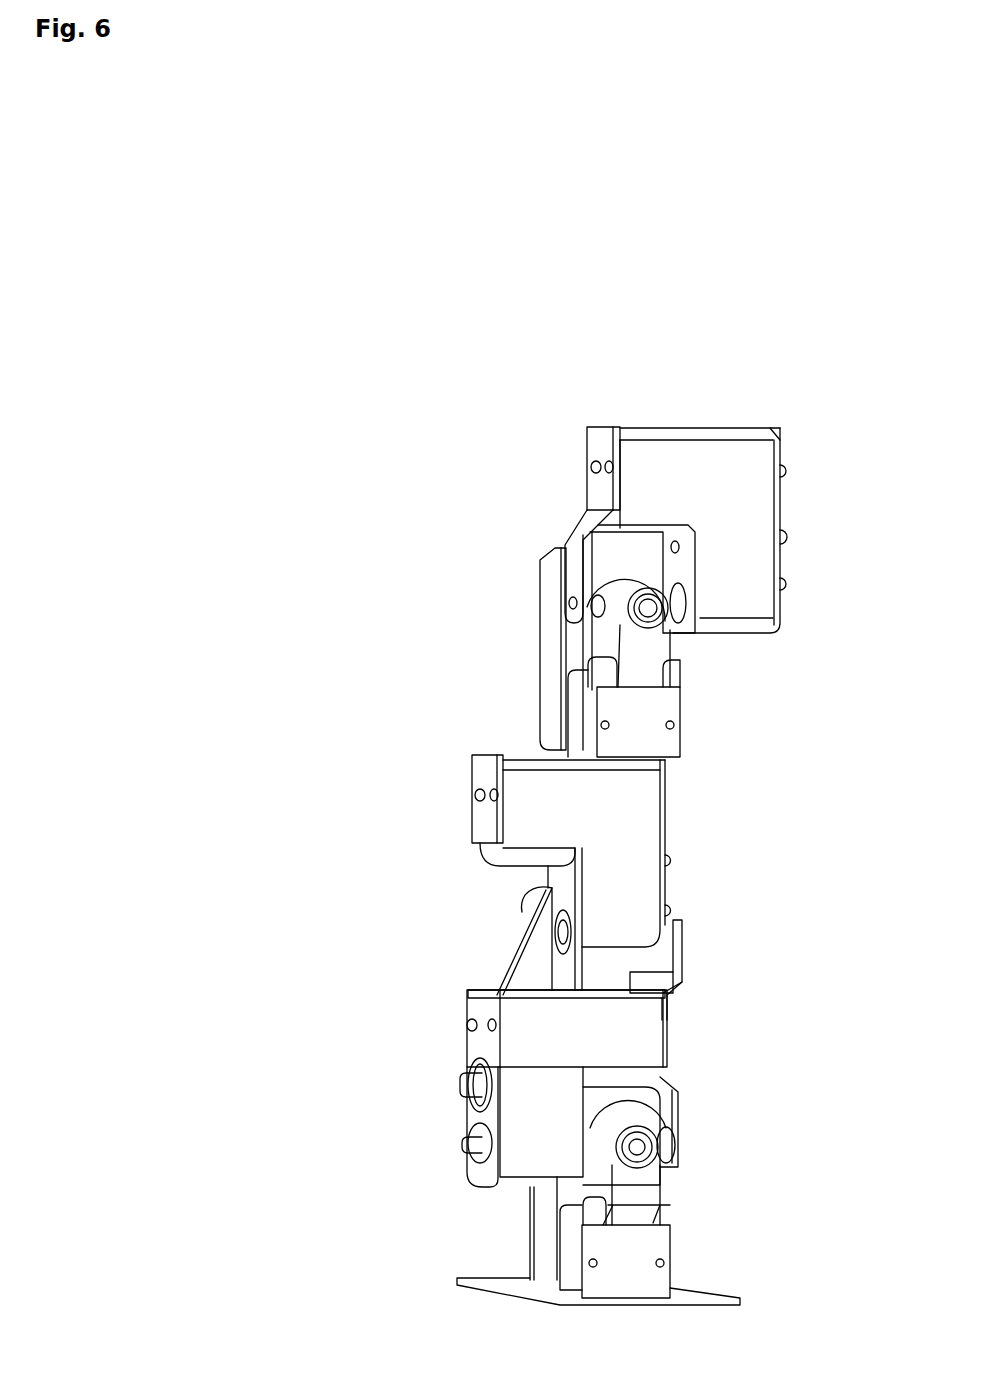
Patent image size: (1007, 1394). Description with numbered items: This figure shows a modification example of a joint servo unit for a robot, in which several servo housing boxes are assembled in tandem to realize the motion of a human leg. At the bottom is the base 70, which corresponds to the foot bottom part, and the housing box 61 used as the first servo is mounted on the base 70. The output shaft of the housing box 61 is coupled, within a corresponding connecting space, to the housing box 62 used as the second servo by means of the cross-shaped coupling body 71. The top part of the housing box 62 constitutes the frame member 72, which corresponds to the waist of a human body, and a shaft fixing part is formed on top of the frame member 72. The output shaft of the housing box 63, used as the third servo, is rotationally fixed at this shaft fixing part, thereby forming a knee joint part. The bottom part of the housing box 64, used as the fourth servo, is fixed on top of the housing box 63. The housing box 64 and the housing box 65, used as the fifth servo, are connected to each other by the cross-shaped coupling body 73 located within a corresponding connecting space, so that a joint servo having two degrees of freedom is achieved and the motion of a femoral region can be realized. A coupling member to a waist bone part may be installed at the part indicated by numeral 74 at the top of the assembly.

The housing box 61 is at (538, 1236).
The housing box 62 is at (513, 1103).
The housing box 63 is at (633, 858).
The housing box 64 is at (555, 677).
The housing box 65 is at (737, 595).
The base 70 is at (617, 1277).
The cross-shaped coupling body 71 is at (628, 1103).
The frame member 72 is at (670, 958).
The cross-shaped coupling body 73 is at (612, 627).
The coupling member installation part 74 is at (703, 428).